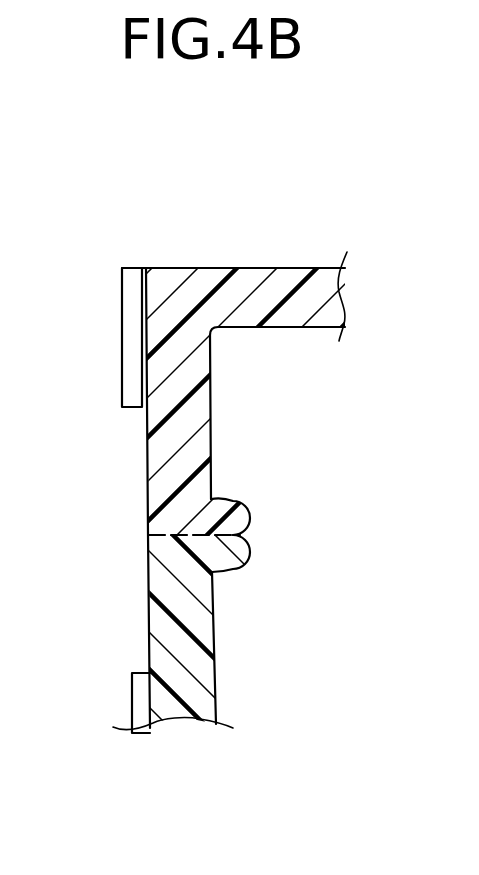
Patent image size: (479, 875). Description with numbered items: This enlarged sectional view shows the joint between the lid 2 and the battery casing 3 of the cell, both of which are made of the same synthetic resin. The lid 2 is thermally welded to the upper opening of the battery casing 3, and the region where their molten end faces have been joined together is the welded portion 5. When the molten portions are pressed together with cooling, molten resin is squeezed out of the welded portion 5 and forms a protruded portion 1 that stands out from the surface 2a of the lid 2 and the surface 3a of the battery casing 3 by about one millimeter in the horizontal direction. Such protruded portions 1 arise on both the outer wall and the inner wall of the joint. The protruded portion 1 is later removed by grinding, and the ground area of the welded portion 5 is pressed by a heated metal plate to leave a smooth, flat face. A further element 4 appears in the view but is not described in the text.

The protruded portion 1 is at (250, 524).
The lid 2 is at (142, 300).
The surface of the lid 2a is at (147, 443).
The battery casing 3 is at (165, 624).
The surface of the battery casing 3a is at (217, 637).
The retaining plate 4 is at (132, 690).
The welded portion 5 is at (148, 535).